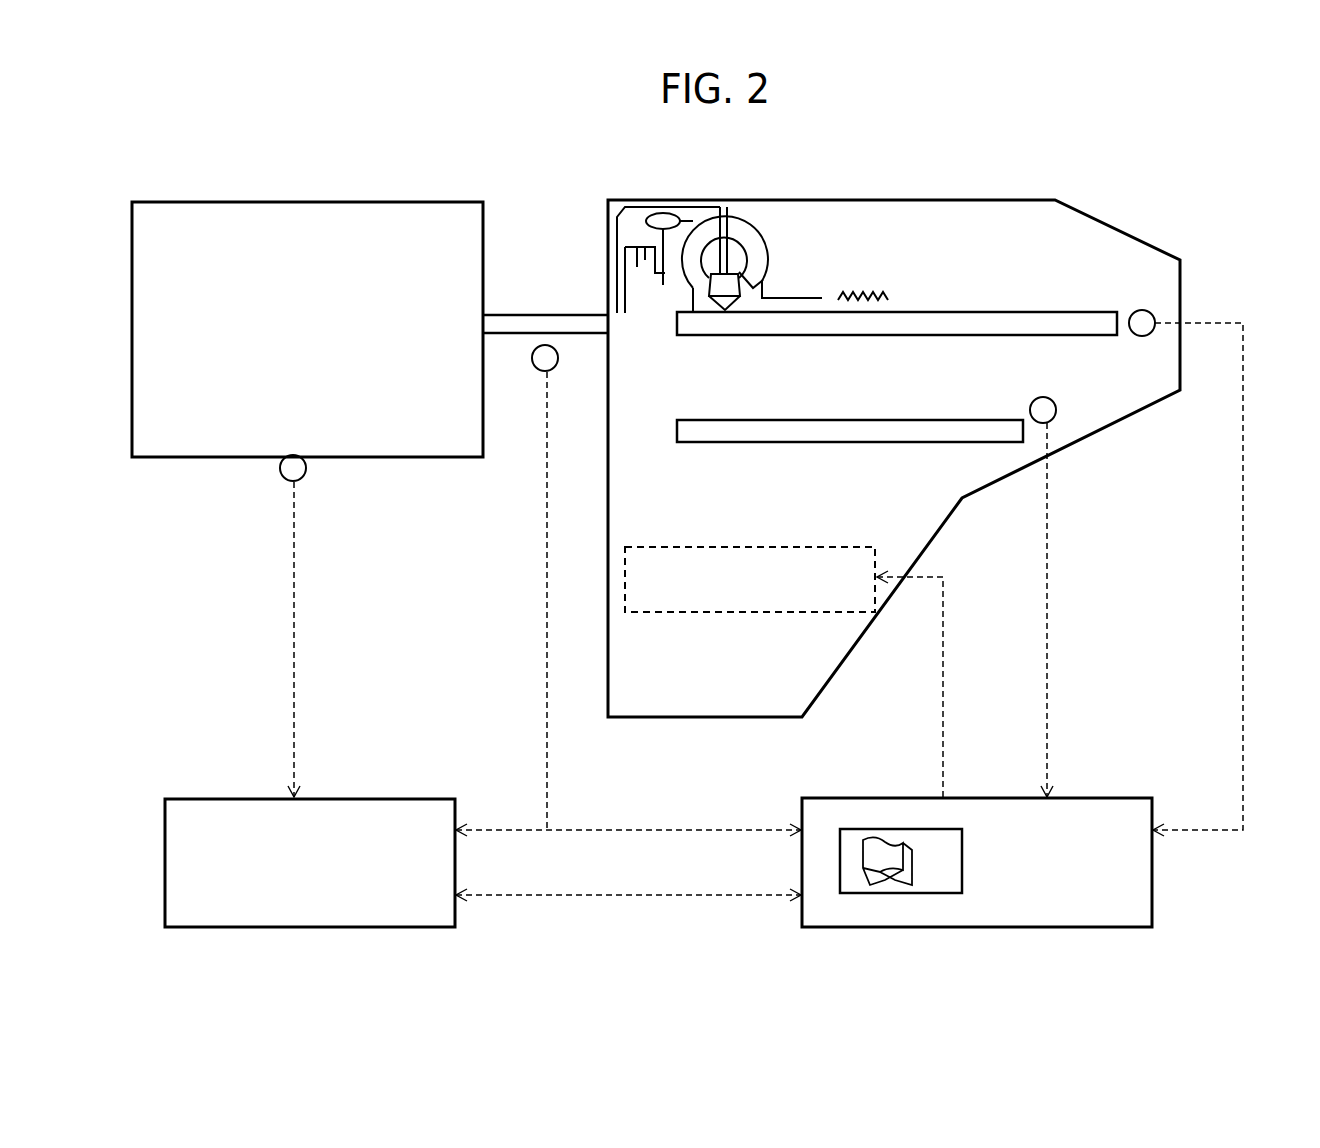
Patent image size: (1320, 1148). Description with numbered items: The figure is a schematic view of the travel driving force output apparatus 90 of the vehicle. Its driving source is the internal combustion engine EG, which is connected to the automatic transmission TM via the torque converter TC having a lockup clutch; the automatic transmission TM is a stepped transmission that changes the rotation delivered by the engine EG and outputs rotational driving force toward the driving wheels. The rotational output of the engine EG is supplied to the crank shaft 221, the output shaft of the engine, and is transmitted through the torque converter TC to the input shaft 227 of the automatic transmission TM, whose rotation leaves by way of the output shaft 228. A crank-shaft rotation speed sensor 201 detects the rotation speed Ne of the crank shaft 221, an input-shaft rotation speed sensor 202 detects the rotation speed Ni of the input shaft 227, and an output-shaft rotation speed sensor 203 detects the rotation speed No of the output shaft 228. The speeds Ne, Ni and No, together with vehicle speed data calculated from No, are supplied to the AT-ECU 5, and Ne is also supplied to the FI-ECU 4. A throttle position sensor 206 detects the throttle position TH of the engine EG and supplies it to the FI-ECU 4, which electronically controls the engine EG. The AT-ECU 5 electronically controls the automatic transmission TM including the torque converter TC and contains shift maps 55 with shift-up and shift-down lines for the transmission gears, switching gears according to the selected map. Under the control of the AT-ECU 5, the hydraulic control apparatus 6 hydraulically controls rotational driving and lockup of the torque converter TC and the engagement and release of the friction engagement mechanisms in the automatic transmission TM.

The internal combustion engine EG is at (322, 201).
The automatic transmission TM is at (887, 200).
The torque converter TC is at (765, 213).
The travel driving force output apparatus 90 is at (1150, 208).
The crank shaft 221 is at (515, 313).
The input shaft 227 is at (957, 311).
The output shaft 228 is at (815, 419).
The crank-shaft rotation speed sensor 201 is at (537, 369).
The input-shaft rotation speed sensor 202 is at (1148, 312).
The output-shaft rotation speed sensor 203 is at (1052, 403).
The throttle position sensor 206 is at (285, 481).
The hydraulic control apparatus 6 is at (711, 614).
The FI-ECU 4 is at (368, 798).
The AT-ECU 5 is at (980, 798).
The shift maps 55 is at (877, 828).
The throttle position TH is at (274, 639).
The rotation speed of the crank shaft Ne is at (628, 633).
The rotation speed of the output shaft No is at (1065, 610).
The rotation speed of the input shaft Ni is at (1214, 576).